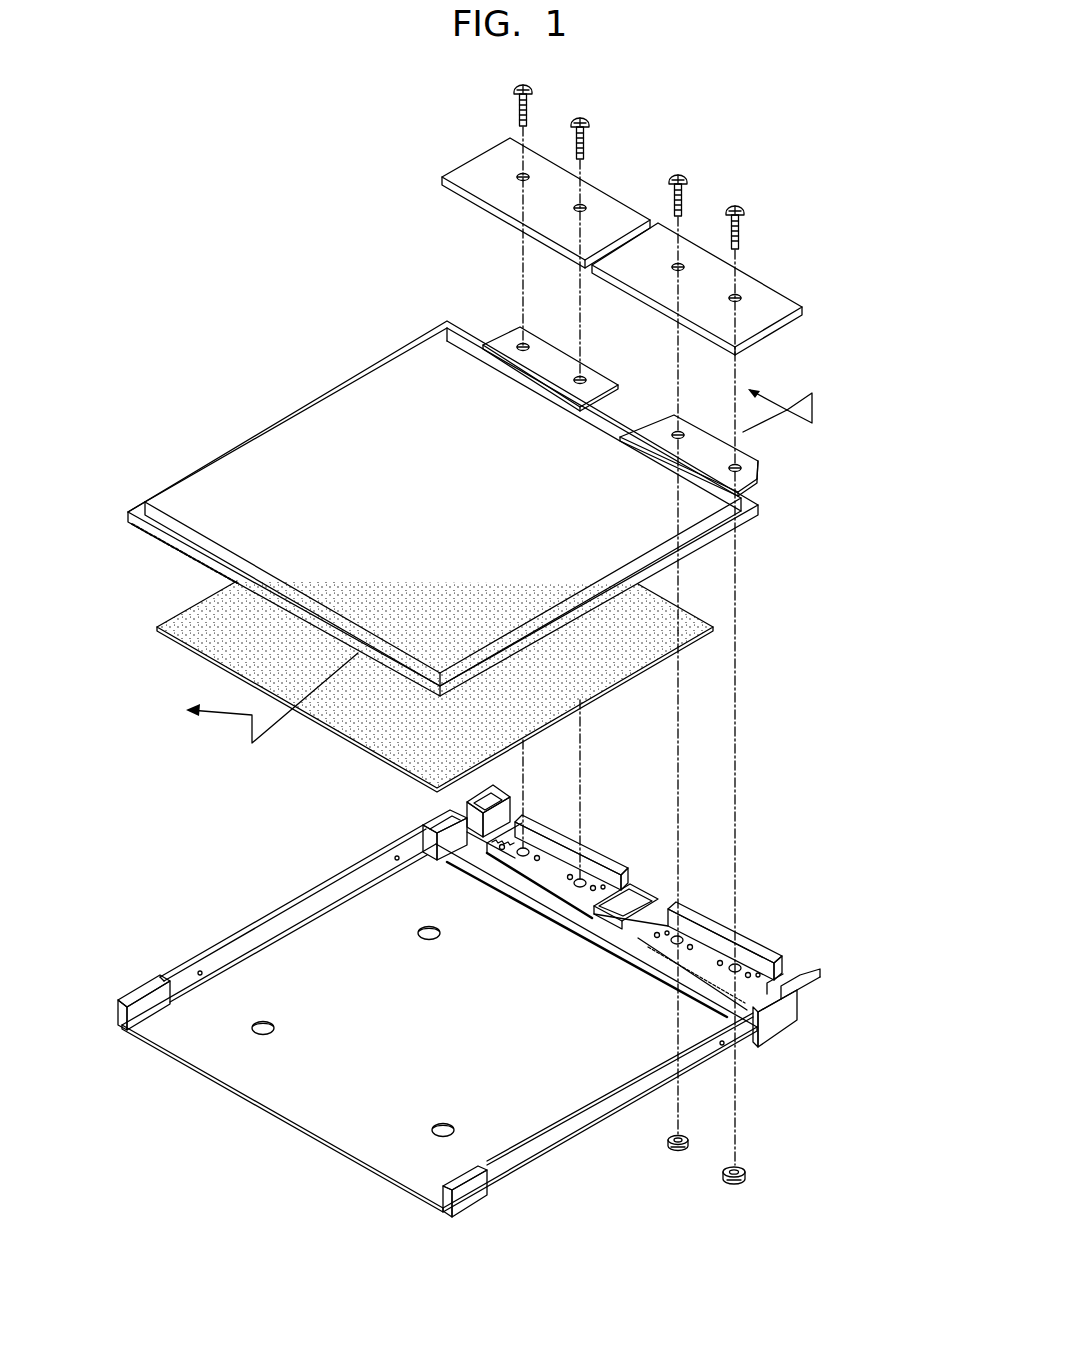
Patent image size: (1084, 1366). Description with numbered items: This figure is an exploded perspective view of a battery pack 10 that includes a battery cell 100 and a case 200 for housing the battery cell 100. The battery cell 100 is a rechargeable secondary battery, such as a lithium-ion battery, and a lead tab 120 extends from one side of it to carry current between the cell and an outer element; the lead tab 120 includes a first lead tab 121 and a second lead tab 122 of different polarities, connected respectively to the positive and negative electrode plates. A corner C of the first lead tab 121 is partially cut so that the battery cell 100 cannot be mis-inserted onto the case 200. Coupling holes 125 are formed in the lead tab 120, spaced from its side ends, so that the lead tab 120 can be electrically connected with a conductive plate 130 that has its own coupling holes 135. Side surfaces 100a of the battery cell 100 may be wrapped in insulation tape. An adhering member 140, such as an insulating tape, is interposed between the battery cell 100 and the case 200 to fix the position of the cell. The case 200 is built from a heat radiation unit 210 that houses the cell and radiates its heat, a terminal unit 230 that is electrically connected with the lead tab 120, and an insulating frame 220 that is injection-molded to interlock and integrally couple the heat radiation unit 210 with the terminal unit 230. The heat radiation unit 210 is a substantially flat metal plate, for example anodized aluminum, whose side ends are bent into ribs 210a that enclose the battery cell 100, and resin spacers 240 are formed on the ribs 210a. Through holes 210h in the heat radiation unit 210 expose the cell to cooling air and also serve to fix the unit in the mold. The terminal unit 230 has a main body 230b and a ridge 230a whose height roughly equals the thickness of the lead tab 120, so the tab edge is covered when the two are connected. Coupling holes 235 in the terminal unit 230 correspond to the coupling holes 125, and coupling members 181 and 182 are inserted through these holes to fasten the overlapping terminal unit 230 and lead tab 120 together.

The battery pack 10 is at (722, 98).
The battery cell 100 is at (287, 417).
The side surfaces of the battery cell 100a is at (135, 510).
The lead tab 120 is at (689, 385).
The first lead tab 121 is at (745, 457).
The second lead tab 122 is at (597, 382).
The coupling hole 125 is at (521, 346).
The conductive plate 130 is at (610, 200).
The coupling hole 135 is at (518, 176).
The adhering member 140 is at (698, 626).
The coupling member 181 is at (744, 208).
The coupling member 182 is at (745, 1178).
The case 200 is at (492, 994).
The heat radiation unit 210 is at (697, 1031).
The rib 210a is at (245, 940).
The through hole 210h is at (253, 1028).
The insulating frame 220 is at (777, 1024).
The terminal unit 230 is at (607, 867).
The ridge 230a is at (715, 927).
The main body 230b is at (710, 957).
The coupling hole 235 is at (524, 851).
The spacer 240 is at (140, 988).
The corner C is at (760, 473).